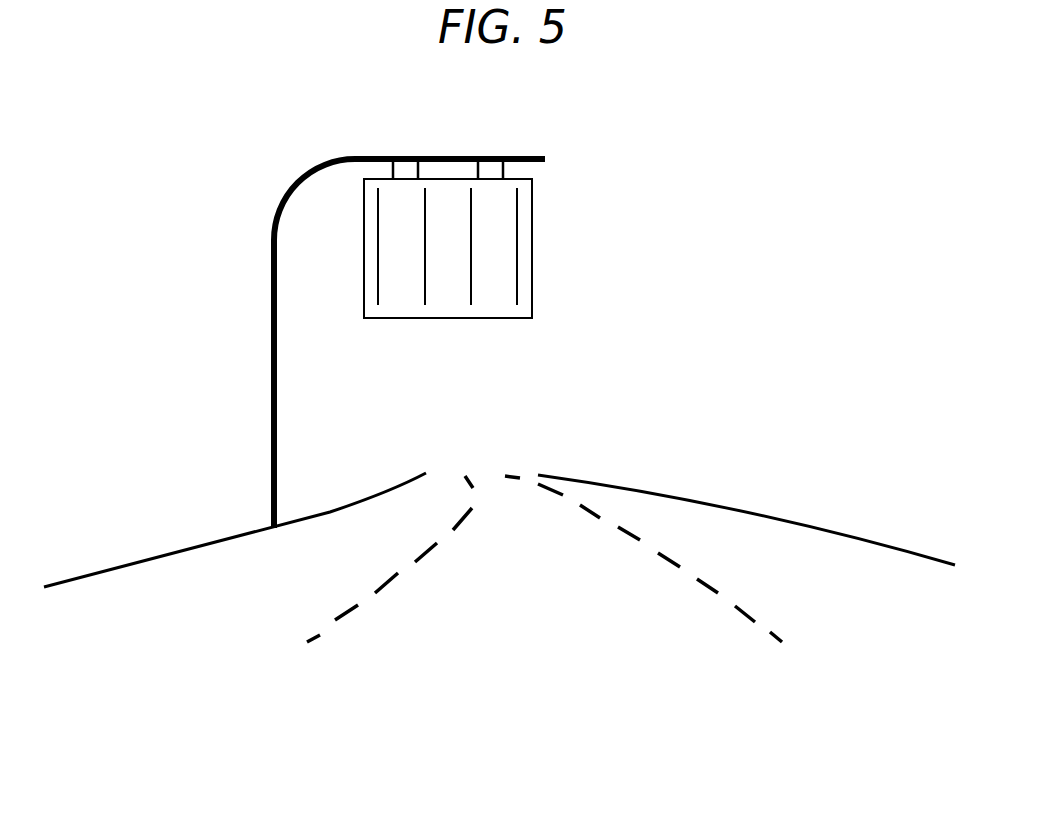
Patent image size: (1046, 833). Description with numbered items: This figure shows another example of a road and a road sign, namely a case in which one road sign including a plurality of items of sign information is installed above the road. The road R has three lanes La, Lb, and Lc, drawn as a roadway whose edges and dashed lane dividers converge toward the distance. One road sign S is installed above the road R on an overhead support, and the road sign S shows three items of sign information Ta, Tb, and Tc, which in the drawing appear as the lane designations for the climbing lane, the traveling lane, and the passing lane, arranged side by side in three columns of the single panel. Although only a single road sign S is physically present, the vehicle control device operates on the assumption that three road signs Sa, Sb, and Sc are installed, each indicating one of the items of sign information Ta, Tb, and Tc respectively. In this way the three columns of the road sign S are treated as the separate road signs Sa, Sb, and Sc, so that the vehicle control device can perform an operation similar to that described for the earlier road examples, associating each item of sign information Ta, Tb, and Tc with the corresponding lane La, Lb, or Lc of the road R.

The road R is at (267, 527).
The road sign S is at (490, 203).
The road sign Sa is at (396, 196).
The road sign Sb is at (441, 200).
The road sign Sc is at (485, 196).
The sign information Ta is at (403, 196).
The sign information Tb is at (447, 196).
The sign information Tc is at (533, 212).
The lane La is at (215, 610).
The lane Lb is at (522, 612).
The lane Lc is at (857, 590).